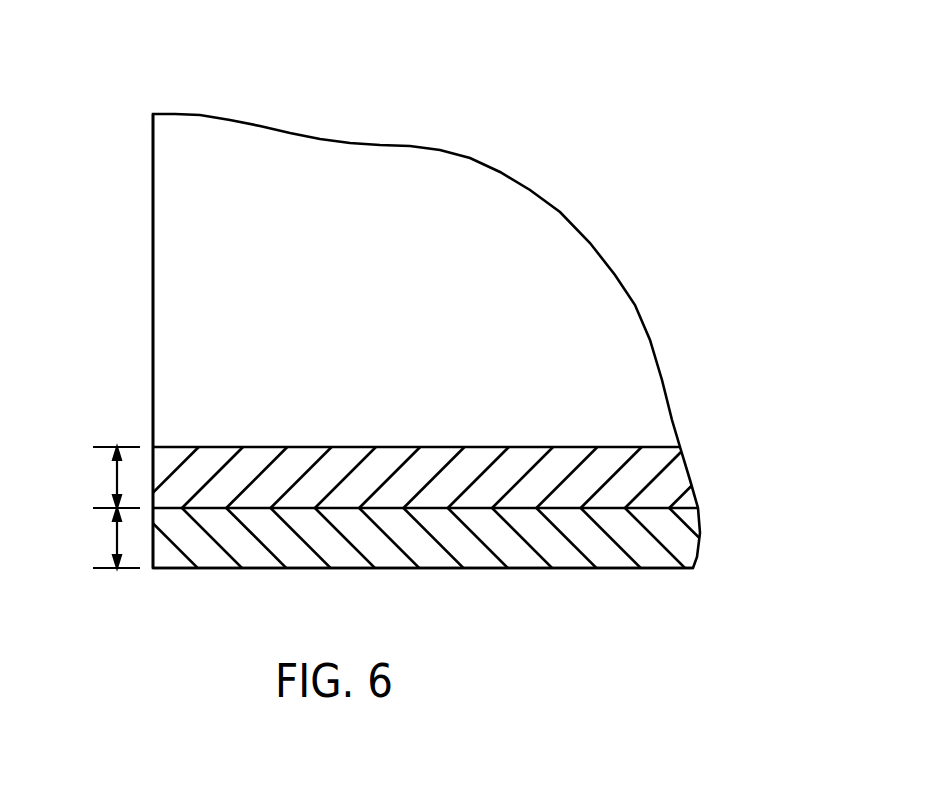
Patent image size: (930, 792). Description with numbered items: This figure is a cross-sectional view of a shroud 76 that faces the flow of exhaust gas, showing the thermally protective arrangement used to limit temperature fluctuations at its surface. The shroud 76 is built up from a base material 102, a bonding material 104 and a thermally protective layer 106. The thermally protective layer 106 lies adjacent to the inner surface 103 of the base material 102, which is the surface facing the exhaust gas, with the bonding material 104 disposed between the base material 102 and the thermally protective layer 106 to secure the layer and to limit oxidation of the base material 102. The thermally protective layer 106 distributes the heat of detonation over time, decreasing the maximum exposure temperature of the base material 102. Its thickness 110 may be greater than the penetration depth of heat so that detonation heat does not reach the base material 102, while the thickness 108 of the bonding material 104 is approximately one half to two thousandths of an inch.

The shroud 76 is at (545, 128).
The base material 102 is at (167, 255).
The inner surface 103 is at (213, 447).
The bonding material 104 is at (513, 465).
The thermally protective layer 106 is at (516, 555).
The thickness of the bonding material 108 is at (115, 473).
The thickness of the thermally protective layer 110 is at (115, 533).